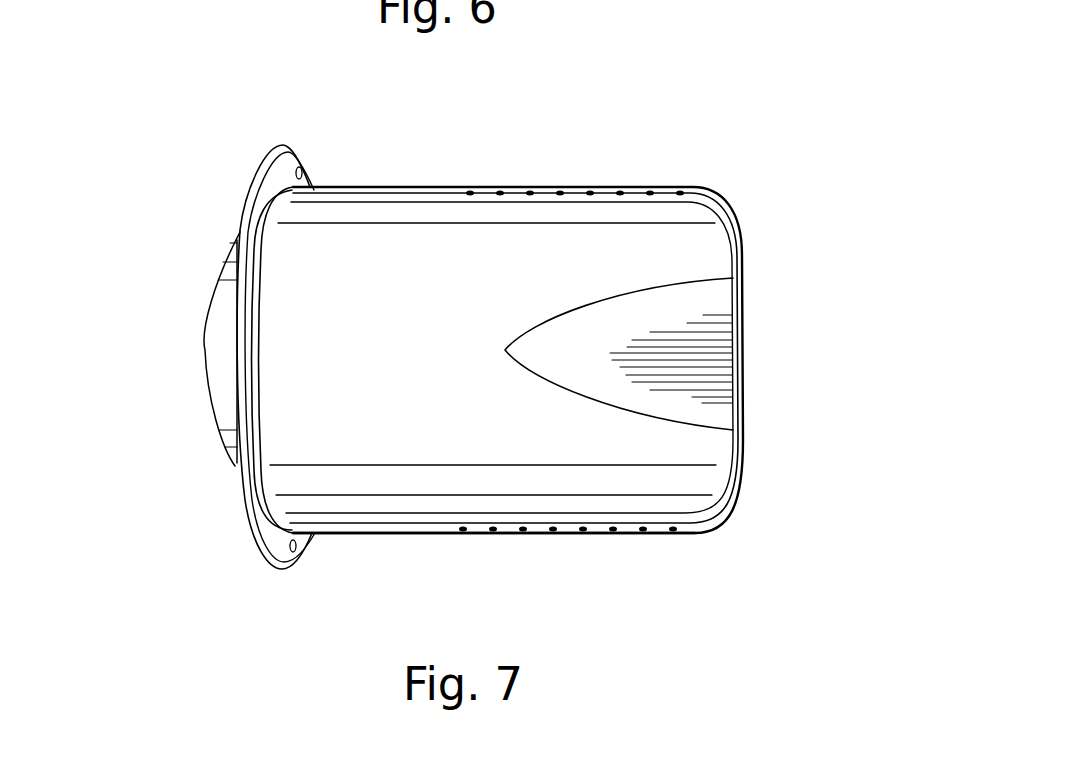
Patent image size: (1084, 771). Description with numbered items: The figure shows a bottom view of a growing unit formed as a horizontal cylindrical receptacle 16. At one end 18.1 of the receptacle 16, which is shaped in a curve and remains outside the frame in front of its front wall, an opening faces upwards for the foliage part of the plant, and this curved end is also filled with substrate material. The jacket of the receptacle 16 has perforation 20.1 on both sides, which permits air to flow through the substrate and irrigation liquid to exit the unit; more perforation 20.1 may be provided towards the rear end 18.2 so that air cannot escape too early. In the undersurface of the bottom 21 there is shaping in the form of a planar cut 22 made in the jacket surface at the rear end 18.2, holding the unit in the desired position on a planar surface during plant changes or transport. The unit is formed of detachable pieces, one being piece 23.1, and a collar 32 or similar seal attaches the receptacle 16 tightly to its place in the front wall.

The receptacle 16 is at (773, 133).
The end of the receptacle 18.1 is at (165, 371).
The rear end of the unit 18.2 is at (771, 303).
The perforation 20.1 is at (556, 165).
The bottom 21 is at (493, 359).
The planar cut 22 is at (687, 353).
The piece 23.1 is at (733, 487).
The collar 32 is at (263, 182).